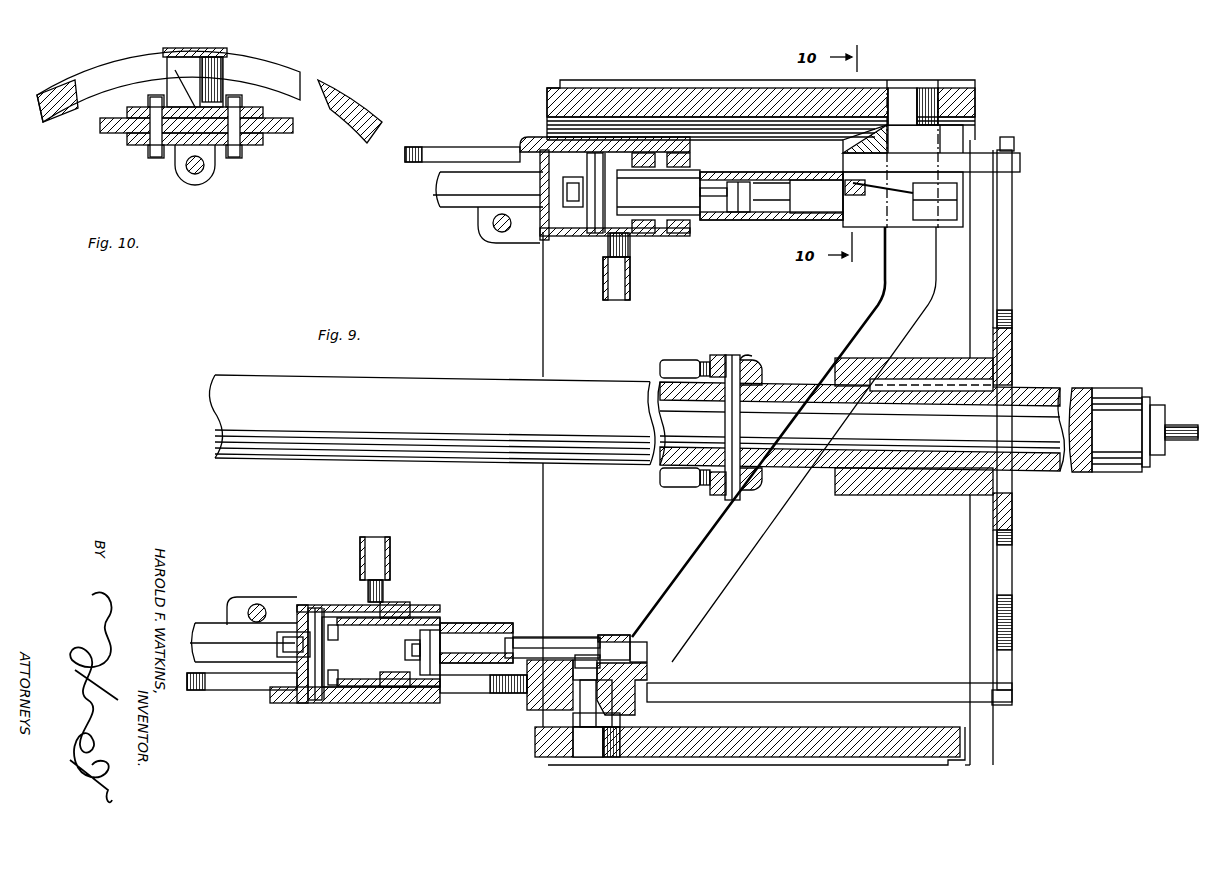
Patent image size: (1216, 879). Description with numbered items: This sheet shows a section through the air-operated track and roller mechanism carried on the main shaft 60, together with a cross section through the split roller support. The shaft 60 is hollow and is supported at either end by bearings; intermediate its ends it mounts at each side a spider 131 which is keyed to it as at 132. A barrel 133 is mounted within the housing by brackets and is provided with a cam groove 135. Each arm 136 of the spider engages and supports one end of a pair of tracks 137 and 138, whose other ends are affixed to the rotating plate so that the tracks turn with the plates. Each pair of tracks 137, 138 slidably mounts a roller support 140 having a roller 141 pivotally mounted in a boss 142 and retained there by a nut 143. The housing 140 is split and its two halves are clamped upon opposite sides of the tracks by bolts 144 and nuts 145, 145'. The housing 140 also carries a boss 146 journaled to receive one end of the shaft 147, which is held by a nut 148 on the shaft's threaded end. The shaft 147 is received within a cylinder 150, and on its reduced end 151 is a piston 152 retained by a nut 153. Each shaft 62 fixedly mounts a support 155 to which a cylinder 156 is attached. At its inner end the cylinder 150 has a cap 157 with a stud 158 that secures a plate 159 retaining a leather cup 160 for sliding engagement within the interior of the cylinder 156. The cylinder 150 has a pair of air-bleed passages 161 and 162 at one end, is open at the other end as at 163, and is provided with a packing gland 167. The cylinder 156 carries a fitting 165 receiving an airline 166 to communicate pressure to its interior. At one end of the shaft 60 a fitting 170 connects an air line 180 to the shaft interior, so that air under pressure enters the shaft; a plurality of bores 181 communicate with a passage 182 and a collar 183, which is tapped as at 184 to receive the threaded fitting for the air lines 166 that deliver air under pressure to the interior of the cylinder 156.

In FIG. 9, the shaft 60 is at (417, 390).
In FIG. 9, the shaft 62 is at (455, 200).
In FIG. 9, the spider 131 is at (1015, 350).
In FIG. 9, the key 132 is at (930, 380).
In FIG. 9, the barrel 133 is at (868, 98).
In FIG. 10, the cam groove 135 is at (325, 95).
In FIG. 9, the cam groove 135 is at (905, 95).
In FIG. 9, the arm 136 is at (1012, 210).
In FIG. 10, the track 137 is at (275, 135).
In FIG. 9, the track 137 is at (975, 155).
In FIG. 10, the track 138 is at (115, 140).
In FIG. 9, the track 138 is at (440, 150).
In FIG. 10, the roller support 140 is at (138, 150).
In FIG. 9, the roller support 140 is at (970, 140).
In FIG. 10, the roller 141 is at (198, 73).
In FIG. 9, the roller 141 is at (917, 100).
In FIG. 10, the boss 142 is at (185, 93).
In FIG. 9, the boss 142 is at (906, 128).
In FIG. 9, the nut 143 is at (578, 658).
In FIG. 10, the bolt 144 is at (155, 110).
In FIG. 9, the bolt 144 is at (848, 140).
In FIG. 10, the nut 145 is at (206, 166).
In FIG. 9, the nut 145 is at (937, 208).
In FIG. 10, the nut 145' is at (137, 168).
In FIG. 10, the boss 146 is at (178, 152).
In FIG. 9, the boss 146 is at (925, 205).
In FIG. 10, the shaft 147 is at (196, 172).
In FIG. 9, the shaft 147 is at (806, 200).
In FIG. 9, the nut 148 is at (640, 642).
In FIG. 9, the cylinder 150 is at (730, 215).
In FIG. 9, the reduced end 151 is at (437, 646).
In FIG. 9, the piston 152 is at (743, 220).
In FIG. 9, the nut 153 is at (733, 183).
In FIG. 9, the support 155 is at (523, 232).
In FIG. 9, the cylinder 156 is at (556, 236).
In FIG. 9, the cap 157 is at (612, 186).
In FIG. 9, the stud 158 is at (563, 187).
In FIG. 9, the plate 159 is at (590, 237).
In FIG. 9, the leather cup 160 is at (600, 200).
In FIG. 9, the air-bleed passage 161 is at (335, 690).
In FIG. 9, the air-bleed passage 162 is at (333, 627).
In FIG. 9, the open end 163 is at (765, 183).
In FIG. 9, the fitting 165 is at (628, 244).
In FIG. 9, the airline 166 is at (676, 362).
In FIG. 9, the packing gland 167 is at (405, 608).
In FIG. 9, the fitting 170 is at (1157, 405).
In FIG. 9, the air line 180 is at (1180, 425).
In FIG. 9, the bore 181 is at (755, 370).
In FIG. 9, the passage 182 is at (735, 372).
In FIG. 9, the collar 183 is at (745, 358).
In FIG. 9, the tapped hole 184 is at (708, 365).